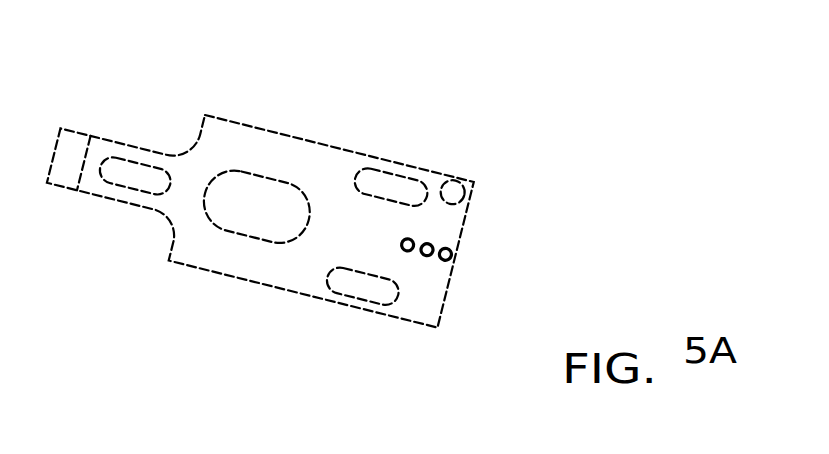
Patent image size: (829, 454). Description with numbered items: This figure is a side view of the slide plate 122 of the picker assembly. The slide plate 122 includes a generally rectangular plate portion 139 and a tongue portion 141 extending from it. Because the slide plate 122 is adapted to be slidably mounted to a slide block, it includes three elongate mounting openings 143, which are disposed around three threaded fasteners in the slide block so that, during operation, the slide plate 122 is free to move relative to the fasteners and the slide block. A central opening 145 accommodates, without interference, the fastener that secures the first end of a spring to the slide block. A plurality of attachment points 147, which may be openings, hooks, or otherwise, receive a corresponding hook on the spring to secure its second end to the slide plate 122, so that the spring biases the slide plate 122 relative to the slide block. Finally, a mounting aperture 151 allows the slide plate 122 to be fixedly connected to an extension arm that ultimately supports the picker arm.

The slide plate 122 is at (297, 131).
The plate portion 139 is at (255, 232).
The tongue portion 141 is at (88, 183).
The elongate mounting openings 143 is at (138, 168).
The central opening 145 is at (266, 178).
The attachment points 147 is at (437, 229).
The mounting aperture 151 is at (460, 182).